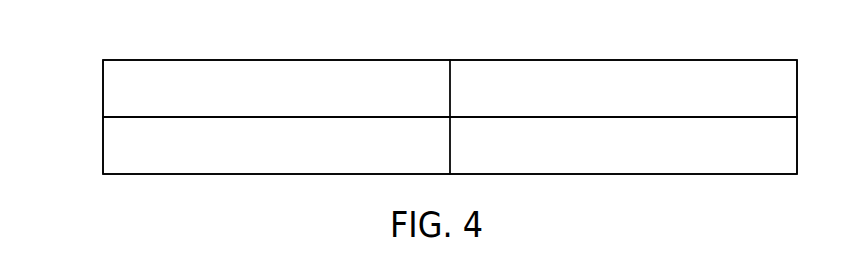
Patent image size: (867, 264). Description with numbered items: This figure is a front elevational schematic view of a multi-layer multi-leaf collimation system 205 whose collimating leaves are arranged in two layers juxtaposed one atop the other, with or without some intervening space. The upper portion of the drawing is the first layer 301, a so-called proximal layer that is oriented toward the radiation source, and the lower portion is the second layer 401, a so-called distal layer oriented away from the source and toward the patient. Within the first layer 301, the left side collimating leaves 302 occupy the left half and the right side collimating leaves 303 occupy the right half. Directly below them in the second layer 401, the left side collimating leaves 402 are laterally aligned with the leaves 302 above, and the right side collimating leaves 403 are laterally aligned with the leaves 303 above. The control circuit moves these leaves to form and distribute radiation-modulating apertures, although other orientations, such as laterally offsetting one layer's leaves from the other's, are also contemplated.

The multi-layer multi-leaf collimation system 205 is at (382, 204).
The first layer 301 is at (103, 93).
The left side collimating leaves 302 is at (277, 72).
The right side collimating leaves 303 is at (600, 73).
The second layer 401 is at (103, 145).
The left side collimating leaves 402 is at (272, 167).
The right side collimating leaves 403 is at (562, 167).